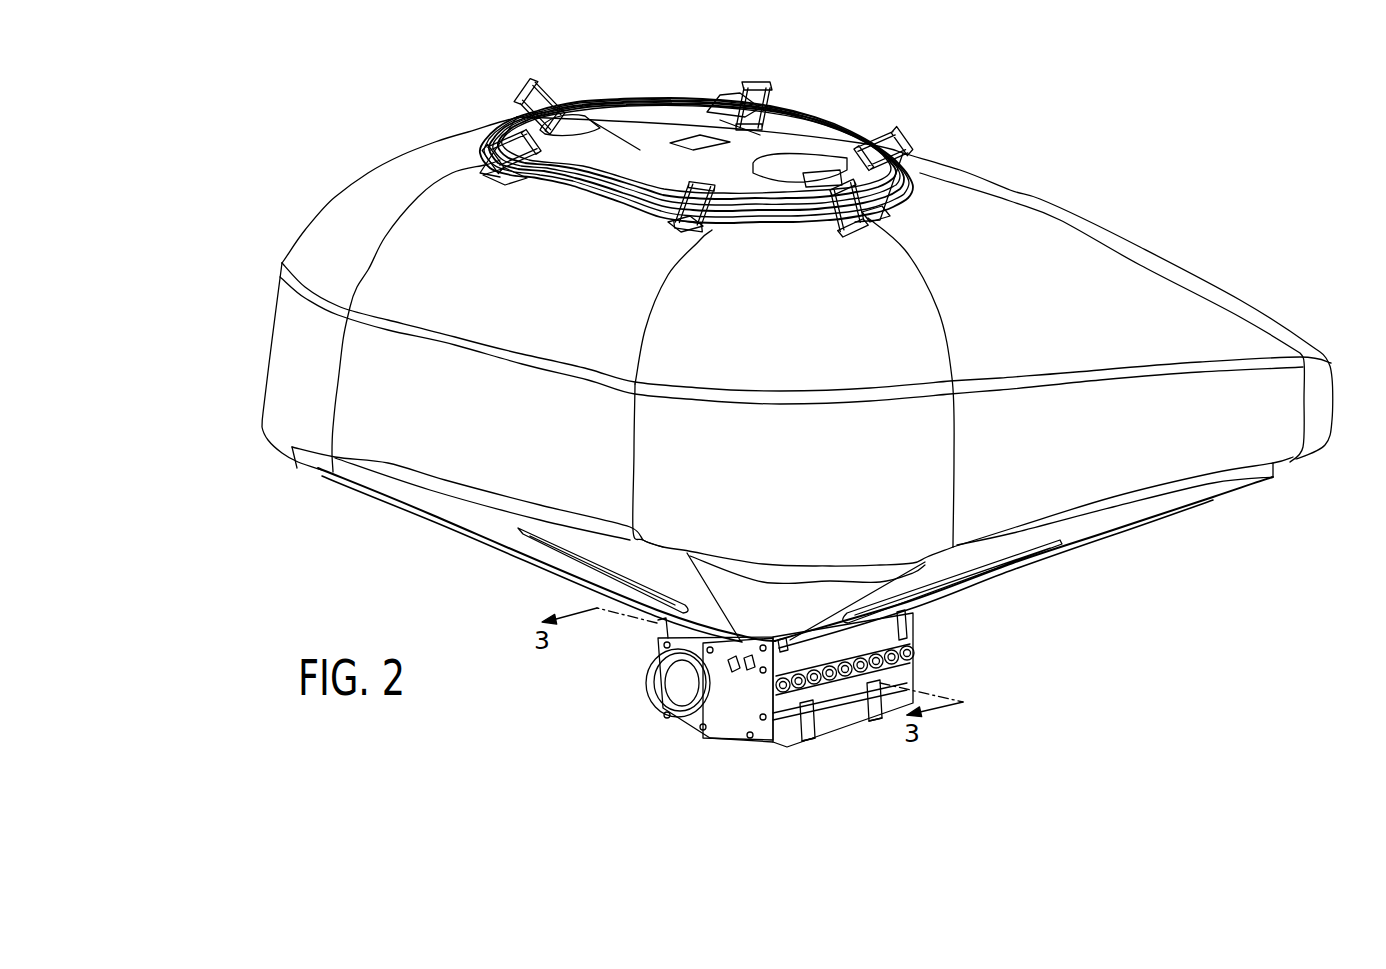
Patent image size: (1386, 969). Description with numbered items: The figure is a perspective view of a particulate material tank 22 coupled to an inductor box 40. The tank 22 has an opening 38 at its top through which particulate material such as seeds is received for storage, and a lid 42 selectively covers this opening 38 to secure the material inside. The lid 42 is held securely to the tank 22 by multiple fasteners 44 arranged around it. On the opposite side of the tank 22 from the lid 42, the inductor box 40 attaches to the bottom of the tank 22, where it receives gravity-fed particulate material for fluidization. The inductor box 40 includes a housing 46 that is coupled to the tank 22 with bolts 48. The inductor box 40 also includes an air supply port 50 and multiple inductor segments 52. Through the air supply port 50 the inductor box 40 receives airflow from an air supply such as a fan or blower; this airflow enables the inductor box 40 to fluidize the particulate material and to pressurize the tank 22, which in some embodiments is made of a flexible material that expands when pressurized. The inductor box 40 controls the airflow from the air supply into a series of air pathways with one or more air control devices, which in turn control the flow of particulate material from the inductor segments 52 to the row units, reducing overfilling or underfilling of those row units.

The particulate material tank 22 is at (1075, 157).
The opening 38 is at (775, 228).
The lid 42 is at (655, 130).
The fasteners 44 is at (545, 105).
The inductor box 40 is at (743, 757).
The housing 46 is at (732, 720).
The bolts 48 is at (748, 670).
The air supply port 50 is at (656, 688).
The inductor segments 52 is at (823, 690).